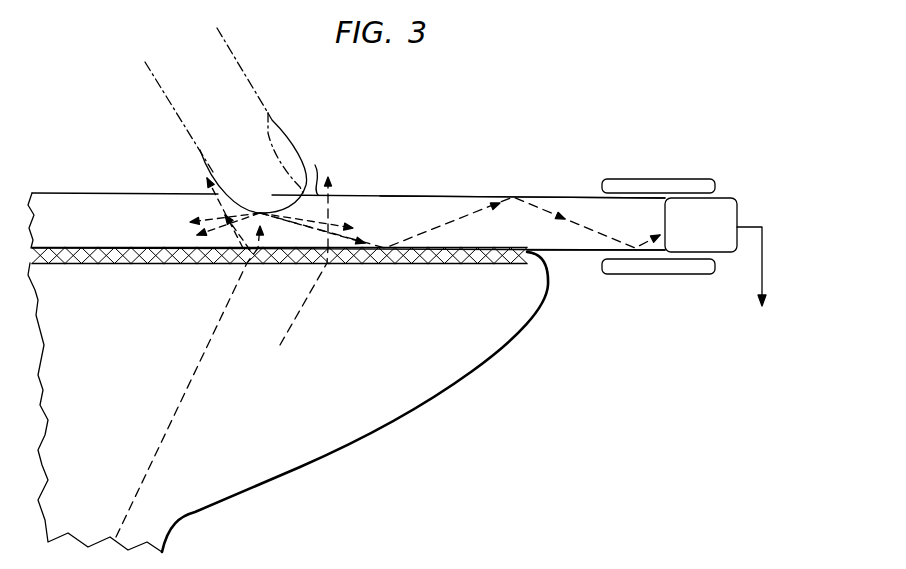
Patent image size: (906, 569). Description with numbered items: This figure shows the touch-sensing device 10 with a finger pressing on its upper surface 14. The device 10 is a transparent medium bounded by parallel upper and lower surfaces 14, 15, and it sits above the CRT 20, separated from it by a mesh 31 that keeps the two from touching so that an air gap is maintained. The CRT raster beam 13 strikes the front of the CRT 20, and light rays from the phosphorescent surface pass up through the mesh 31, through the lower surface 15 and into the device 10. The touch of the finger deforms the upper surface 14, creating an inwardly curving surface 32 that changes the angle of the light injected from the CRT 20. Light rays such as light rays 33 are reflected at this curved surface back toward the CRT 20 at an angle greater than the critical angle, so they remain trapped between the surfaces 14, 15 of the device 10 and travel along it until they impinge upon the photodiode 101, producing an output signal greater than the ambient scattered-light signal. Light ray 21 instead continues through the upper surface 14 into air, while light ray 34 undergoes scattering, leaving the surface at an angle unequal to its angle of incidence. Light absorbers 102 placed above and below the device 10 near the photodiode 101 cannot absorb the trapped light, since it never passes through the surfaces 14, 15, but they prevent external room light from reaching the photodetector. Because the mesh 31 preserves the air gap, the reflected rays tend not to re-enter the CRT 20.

The device 10 is at (530, 197).
The CRT raster beam 13 is at (200, 372).
The upper surface 14 is at (566, 197).
The lower surface 15 is at (585, 255).
The CRT 20 is at (408, 402).
The light ray 21 is at (335, 193).
The mesh 31 is at (540, 260).
The inwardly curving surface 32 is at (320, 196).
The light rays 33 is at (345, 226).
The light ray 34 is at (240, 250).
The photodiode 101 is at (726, 205).
The light absorbers 102 is at (663, 181).